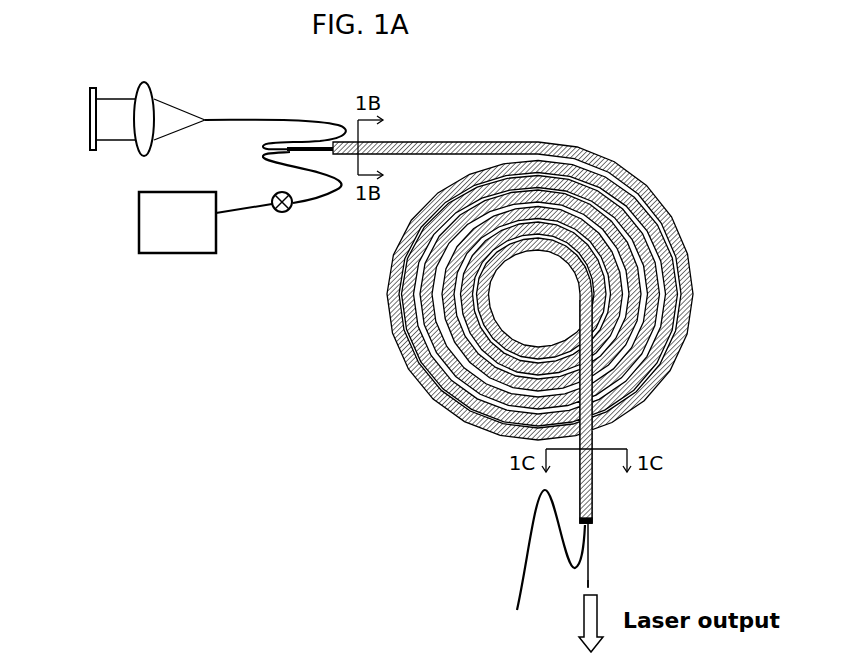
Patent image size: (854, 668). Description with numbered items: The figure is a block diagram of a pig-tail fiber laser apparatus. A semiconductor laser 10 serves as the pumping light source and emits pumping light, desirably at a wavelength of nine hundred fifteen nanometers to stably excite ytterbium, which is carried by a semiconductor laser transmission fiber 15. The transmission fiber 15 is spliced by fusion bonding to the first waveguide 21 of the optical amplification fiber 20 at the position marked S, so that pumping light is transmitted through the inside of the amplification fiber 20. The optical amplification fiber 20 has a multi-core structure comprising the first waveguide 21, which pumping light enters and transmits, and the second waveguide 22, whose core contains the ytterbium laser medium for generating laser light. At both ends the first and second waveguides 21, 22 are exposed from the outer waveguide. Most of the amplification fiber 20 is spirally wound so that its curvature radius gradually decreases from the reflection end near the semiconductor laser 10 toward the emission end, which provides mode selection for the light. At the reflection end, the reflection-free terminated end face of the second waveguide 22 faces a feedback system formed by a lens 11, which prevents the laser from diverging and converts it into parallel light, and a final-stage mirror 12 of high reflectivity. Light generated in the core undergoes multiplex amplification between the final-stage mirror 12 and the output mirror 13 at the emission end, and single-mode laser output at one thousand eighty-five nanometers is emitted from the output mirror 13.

The semiconductor laser 10 is at (138, 220).
The lens 11 is at (145, 95).
The final-stage mirror 12 is at (89, 117).
The output mirror 13 is at (590, 586).
The semiconductor laser transmission fiber 15 is at (253, 208).
The optical amplification fiber 20 is at (652, 190).
The first waveguide 21 is at (323, 197).
The second waveguide 22 is at (263, 118).
The fusion bonding position S is at (287, 213).